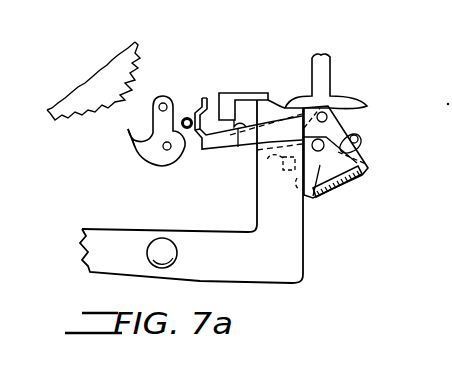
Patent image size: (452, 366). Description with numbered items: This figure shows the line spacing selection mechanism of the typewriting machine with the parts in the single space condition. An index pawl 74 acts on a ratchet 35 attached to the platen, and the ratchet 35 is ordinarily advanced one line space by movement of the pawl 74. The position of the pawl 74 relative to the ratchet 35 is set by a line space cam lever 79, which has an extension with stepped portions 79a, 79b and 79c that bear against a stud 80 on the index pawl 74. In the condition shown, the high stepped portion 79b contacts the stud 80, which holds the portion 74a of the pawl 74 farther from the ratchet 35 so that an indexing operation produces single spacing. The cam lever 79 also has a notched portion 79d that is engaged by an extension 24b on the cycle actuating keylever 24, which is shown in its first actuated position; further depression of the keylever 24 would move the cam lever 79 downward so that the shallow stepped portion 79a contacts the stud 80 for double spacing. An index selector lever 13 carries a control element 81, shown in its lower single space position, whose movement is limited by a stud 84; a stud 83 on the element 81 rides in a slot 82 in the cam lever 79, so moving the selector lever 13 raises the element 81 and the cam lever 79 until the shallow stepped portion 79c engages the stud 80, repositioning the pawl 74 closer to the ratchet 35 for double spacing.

The index selector lever 13 is at (322, 70).
The cycle actuating keylever 24 is at (290, 254).
The extension on the actuating lever 24b is at (263, 92).
The ratchet 35 is at (135, 42).
The index pawl 74 is at (140, 151).
The portion of pawl 74a is at (126, 130).
The line space cam lever 79 is at (215, 152).
The shallow stepped portion 79a is at (204, 97).
The high stepped portion 79b is at (249, 100).
The shallow stepped portion 79c is at (198, 141).
The notched portion 79d is at (238, 150).
The stud 80 is at (187, 118).
The control element 81 is at (325, 163).
The slot 82 is at (342, 128).
The stud 83 is at (361, 141).
The stud 84 is at (282, 170).